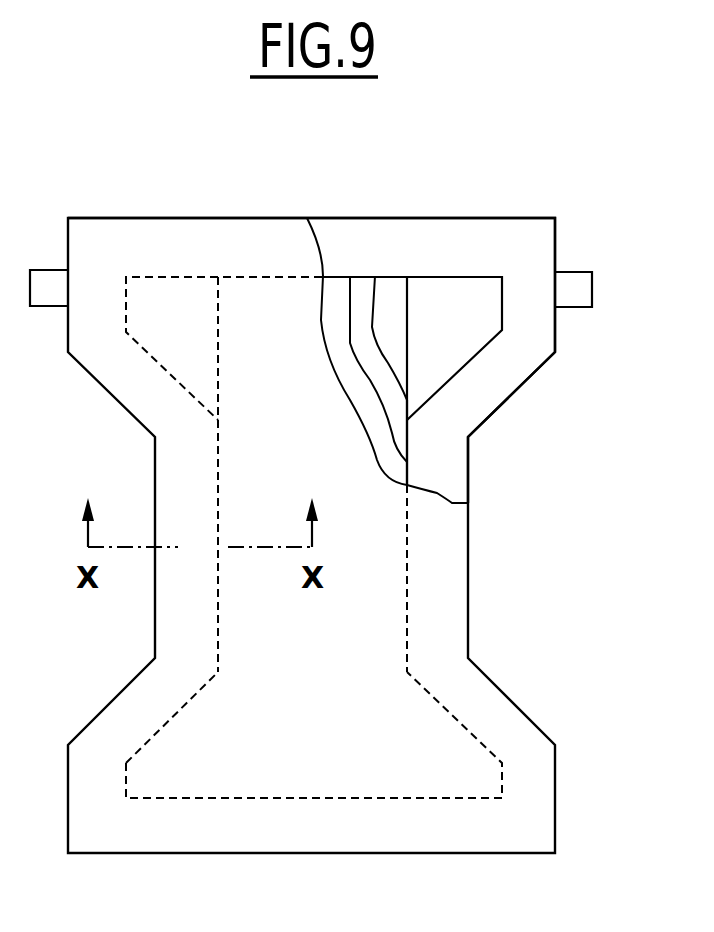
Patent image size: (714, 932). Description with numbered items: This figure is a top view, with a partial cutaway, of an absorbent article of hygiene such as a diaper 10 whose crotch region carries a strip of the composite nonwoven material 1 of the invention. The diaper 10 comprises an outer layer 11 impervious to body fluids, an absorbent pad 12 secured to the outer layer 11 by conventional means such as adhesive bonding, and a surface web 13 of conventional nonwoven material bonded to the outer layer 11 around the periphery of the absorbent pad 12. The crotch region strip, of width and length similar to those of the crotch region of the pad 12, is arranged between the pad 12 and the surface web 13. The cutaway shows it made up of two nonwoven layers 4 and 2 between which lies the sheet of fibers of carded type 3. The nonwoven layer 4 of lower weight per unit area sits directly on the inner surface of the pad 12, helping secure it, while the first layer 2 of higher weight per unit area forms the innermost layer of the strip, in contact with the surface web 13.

The composite nonwoven material 1 is at (428, 441).
The first layer 2 is at (335, 295).
The sheet of fibers of carded type 3 is at (362, 295).
The nonwoven layer 4 is at (392, 293).
The diaper 10 is at (495, 533).
The outer layer 11 is at (507, 253).
The absorbent pad 12 is at (447, 337).
The surface web 13 is at (257, 257).